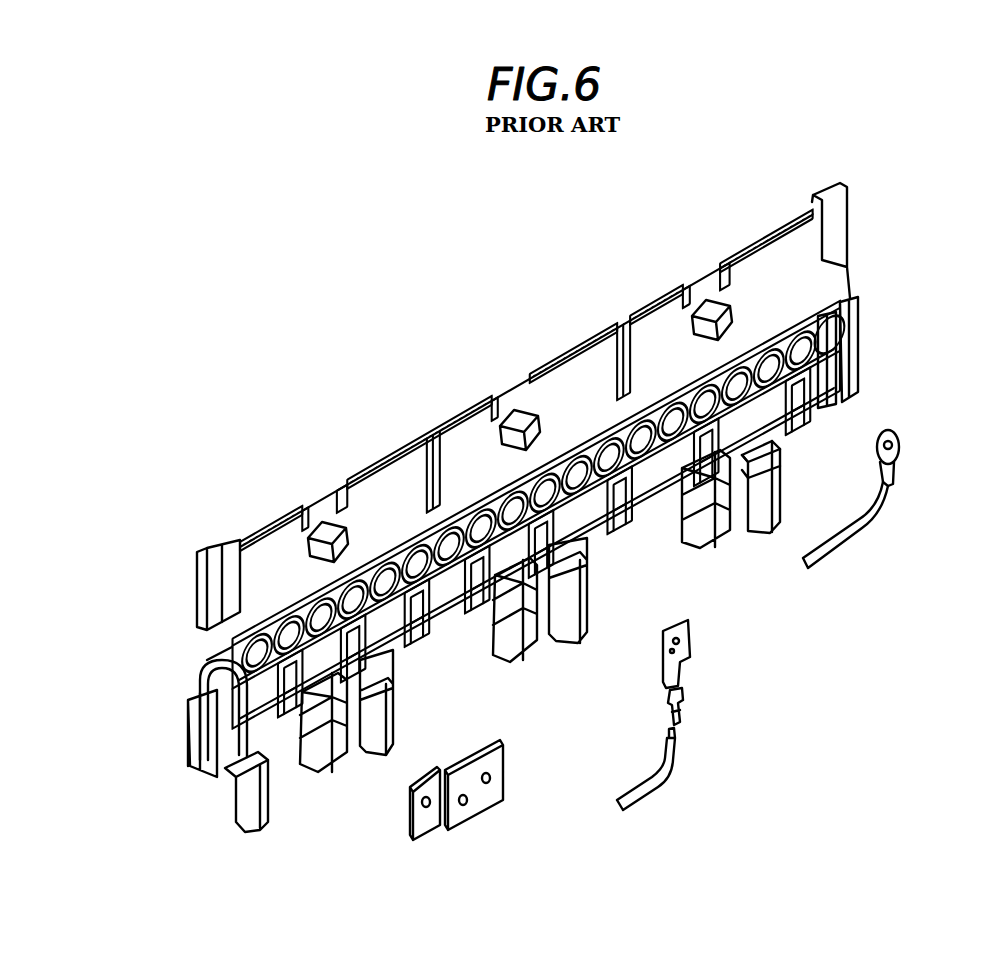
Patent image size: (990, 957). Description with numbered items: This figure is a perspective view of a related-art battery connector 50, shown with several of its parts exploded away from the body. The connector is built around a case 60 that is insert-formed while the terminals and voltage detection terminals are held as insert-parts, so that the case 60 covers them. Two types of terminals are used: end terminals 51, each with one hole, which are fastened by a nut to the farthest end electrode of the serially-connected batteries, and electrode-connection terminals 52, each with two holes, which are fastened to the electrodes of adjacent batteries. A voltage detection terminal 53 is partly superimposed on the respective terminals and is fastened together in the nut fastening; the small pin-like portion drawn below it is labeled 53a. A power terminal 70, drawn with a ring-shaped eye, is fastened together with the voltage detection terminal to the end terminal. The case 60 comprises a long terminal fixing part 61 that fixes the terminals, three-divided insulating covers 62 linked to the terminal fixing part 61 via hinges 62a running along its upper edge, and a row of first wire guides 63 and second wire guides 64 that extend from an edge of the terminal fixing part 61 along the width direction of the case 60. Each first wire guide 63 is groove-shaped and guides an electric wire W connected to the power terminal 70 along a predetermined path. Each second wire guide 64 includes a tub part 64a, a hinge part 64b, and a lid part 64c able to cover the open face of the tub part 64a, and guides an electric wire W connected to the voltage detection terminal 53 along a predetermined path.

The battery connector 50 is at (260, 428).
The case 60 is at (176, 580).
The terminal fixing part 61 is at (415, 650).
The insulating covers 62 is at (356, 500).
The hinges 62a is at (268, 600).
The first wire guides 63 is at (330, 772).
The second wire guides 64 is at (378, 765).
The tub part 64a is at (767, 452).
The hinge part 64b is at (773, 472).
The lid part 64c is at (773, 500).
The end terminals 51 is at (430, 817).
The electrode-connection terminals 52 is at (480, 770).
The voltage detection terminals 53 is at (690, 637).
The terminal pin 53a is at (683, 714).
The power terminal 70 is at (903, 442).
The electric wire W is at (857, 537).